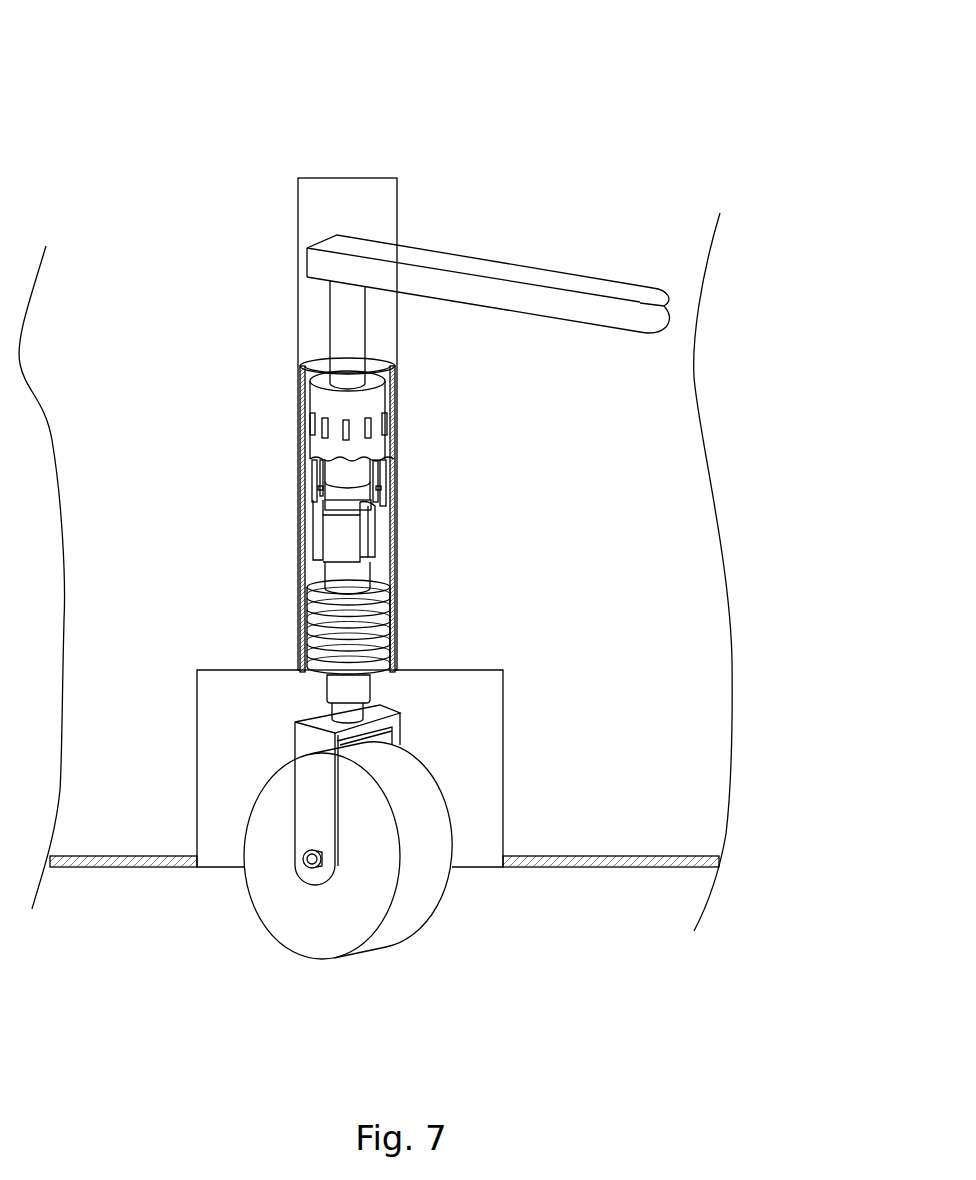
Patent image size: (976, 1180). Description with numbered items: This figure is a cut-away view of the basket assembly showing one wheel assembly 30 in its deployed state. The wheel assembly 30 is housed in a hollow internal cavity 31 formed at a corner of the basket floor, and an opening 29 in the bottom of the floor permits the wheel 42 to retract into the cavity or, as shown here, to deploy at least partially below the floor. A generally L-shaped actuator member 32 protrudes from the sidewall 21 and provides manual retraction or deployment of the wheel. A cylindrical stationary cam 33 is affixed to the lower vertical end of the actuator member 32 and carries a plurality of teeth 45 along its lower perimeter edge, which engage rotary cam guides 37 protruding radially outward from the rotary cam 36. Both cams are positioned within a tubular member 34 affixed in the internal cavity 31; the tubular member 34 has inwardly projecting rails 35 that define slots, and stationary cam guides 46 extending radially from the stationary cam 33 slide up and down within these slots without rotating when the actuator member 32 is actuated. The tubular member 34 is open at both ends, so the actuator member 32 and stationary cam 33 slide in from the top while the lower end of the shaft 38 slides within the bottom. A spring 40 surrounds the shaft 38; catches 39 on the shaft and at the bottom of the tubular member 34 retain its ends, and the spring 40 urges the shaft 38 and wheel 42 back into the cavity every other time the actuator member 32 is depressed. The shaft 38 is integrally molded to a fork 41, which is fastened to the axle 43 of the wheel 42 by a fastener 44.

The wheel assembly 30 is at (100, 110).
The sidewall 21 is at (135, 838).
The opening 29 is at (480, 880).
The internal cavity 31 is at (218, 855).
The actuator member 32 is at (545, 270).
The stationary cam 33 is at (380, 393).
The tubular member 34 is at (313, 370).
The rail 35 is at (378, 482).
The rotary cam 36 is at (335, 512).
The rotary cam guide 37 is at (366, 546).
The shaft 38 is at (340, 573).
The catch 39 is at (376, 584).
The spring 40 is at (388, 615).
The fork 41 is at (305, 740).
The wheel 42 is at (420, 805).
The axle 43 is at (305, 856).
The fastener 44 is at (318, 868).
The teeth 45 is at (330, 467).
The stationary cam guide 46 is at (387, 422).